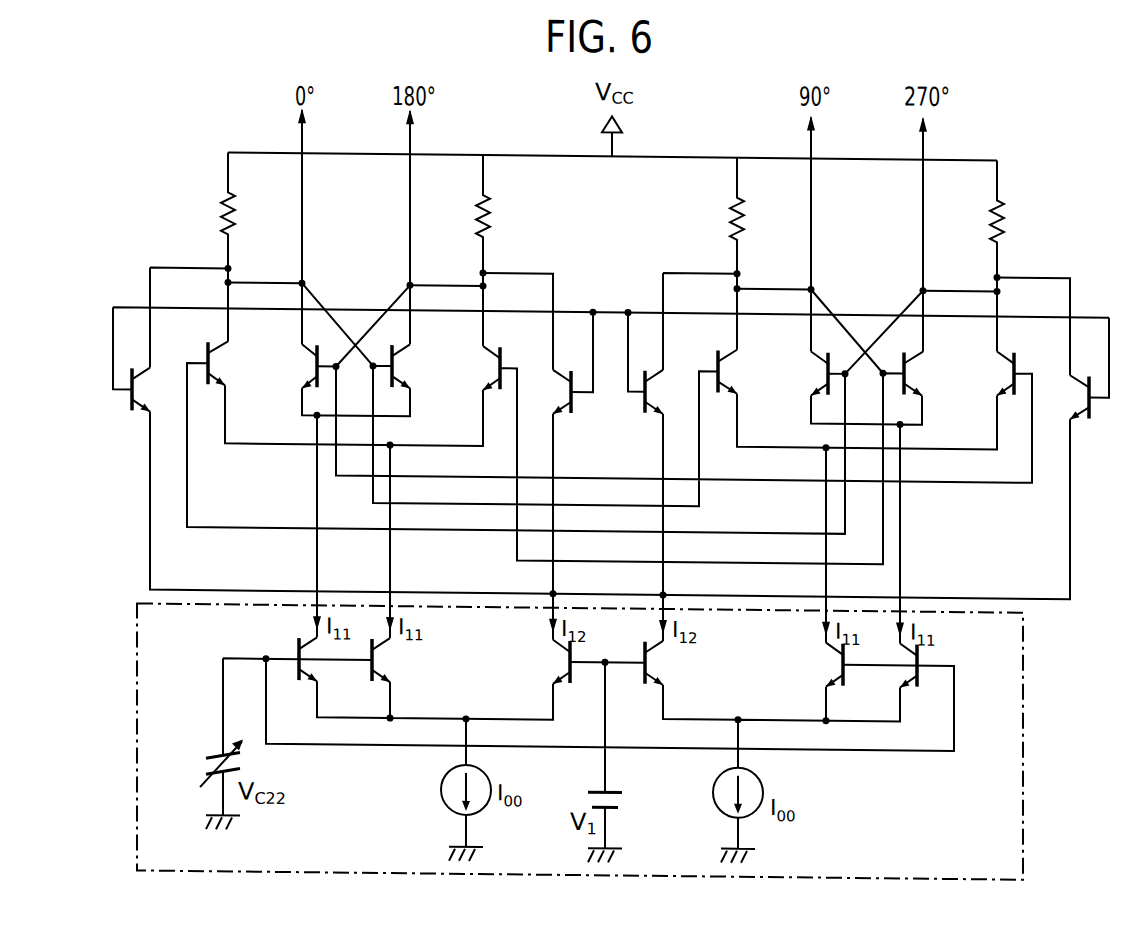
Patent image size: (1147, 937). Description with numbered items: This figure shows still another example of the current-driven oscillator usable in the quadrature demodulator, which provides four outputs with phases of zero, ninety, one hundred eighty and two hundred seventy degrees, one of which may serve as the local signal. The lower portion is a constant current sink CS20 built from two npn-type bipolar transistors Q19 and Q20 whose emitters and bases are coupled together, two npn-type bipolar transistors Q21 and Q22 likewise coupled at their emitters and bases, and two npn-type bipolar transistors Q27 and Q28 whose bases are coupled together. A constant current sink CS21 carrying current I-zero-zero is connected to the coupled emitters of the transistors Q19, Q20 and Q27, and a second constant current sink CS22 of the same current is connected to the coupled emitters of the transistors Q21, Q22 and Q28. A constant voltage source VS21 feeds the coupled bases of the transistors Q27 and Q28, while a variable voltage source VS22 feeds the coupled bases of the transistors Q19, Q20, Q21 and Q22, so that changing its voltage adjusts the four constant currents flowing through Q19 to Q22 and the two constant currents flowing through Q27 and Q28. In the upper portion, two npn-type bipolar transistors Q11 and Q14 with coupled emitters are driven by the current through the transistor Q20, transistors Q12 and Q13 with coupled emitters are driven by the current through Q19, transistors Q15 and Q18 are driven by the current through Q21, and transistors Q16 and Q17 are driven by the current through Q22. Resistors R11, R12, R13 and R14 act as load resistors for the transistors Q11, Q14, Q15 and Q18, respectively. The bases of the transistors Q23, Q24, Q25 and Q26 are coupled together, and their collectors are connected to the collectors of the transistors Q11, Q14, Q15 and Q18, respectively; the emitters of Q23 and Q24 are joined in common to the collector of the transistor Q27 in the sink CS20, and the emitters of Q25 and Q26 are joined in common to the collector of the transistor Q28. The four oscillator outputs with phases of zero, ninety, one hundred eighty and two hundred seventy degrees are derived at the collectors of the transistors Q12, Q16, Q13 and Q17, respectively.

The load resistor R11 is at (246, 247).
The load resistor R12 is at (502, 251).
The load resistor R13 is at (756, 254).
The load resistor R14 is at (1017, 256).
The npn-type bipolar transistor Q11 is at (232, 363).
The npn-type bipolar transistor Q12 is at (293, 366).
The npn-type bipolar transistor Q13 is at (415, 366).
The npn-type bipolar transistor Q14 is at (476, 368).
The npn-type bipolar transistor Q15 is at (742, 372).
The npn-type bipolar transistor Q16 is at (804, 373).
The npn-type bipolar transistor Q17 is at (927, 373).
The npn-type bipolar transistor Q18 is at (989, 373).
The npn-type bipolar transistor Q19 is at (326, 671).
The npn-type bipolar transistor Q20 is at (399, 660).
The npn-type bipolar transistor Q21 is at (818, 664).
The npn-type bipolar transistor Q22 is at (887, 679).
The transistor Q23 is at (156, 389).
The transistor Q24 is at (545, 391).
The transistor Q25 is at (670, 392).
The transistor Q26 is at (1064, 397).
The npn-type bipolar transistor Q27 is at (544, 661).
The npn-type bipolar transistor Q28 is at (671, 663).
The constant current sink CS20 is at (1023, 697).
The constant current sink CS21 is at (440, 786).
The constant current sink CS22 is at (760, 807).
The constant voltage source VS21 is at (618, 794).
The variable voltage source VS22 is at (212, 750).